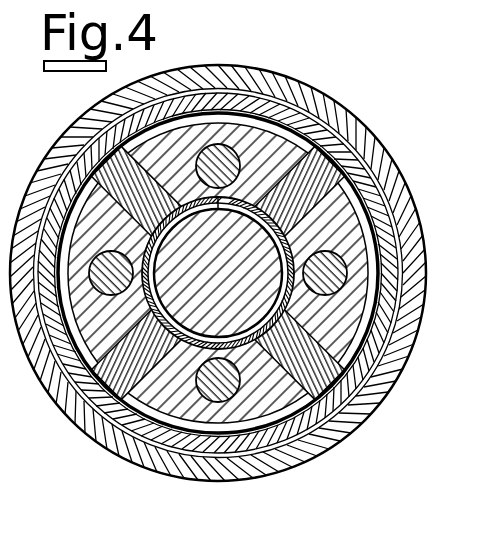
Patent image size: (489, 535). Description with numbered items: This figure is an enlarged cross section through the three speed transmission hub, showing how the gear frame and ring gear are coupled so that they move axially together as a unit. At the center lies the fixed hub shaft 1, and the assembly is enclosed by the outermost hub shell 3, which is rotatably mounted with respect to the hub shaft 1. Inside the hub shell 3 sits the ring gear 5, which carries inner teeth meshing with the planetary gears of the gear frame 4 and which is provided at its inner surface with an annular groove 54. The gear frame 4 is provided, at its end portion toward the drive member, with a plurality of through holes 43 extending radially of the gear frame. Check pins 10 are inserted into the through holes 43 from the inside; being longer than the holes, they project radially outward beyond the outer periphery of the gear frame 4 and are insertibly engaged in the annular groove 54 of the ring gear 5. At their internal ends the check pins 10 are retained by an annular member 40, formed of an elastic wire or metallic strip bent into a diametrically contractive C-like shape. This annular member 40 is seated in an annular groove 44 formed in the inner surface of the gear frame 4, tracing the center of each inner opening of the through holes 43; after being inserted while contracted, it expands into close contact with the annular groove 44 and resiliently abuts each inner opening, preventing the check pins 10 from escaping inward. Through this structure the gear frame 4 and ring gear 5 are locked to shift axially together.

The hub shaft 1 is at (263, 304).
The hub shell 3 is at (336, 112).
The gear frame 4 is at (350, 243).
The ring gear 5 is at (333, 148).
The check pins 10 is at (328, 170).
The annular member 40 is at (322, 282).
The through holes 43 is at (334, 372).
The annular groove 44 is at (241, 340).
The annular groove 54 is at (367, 213).